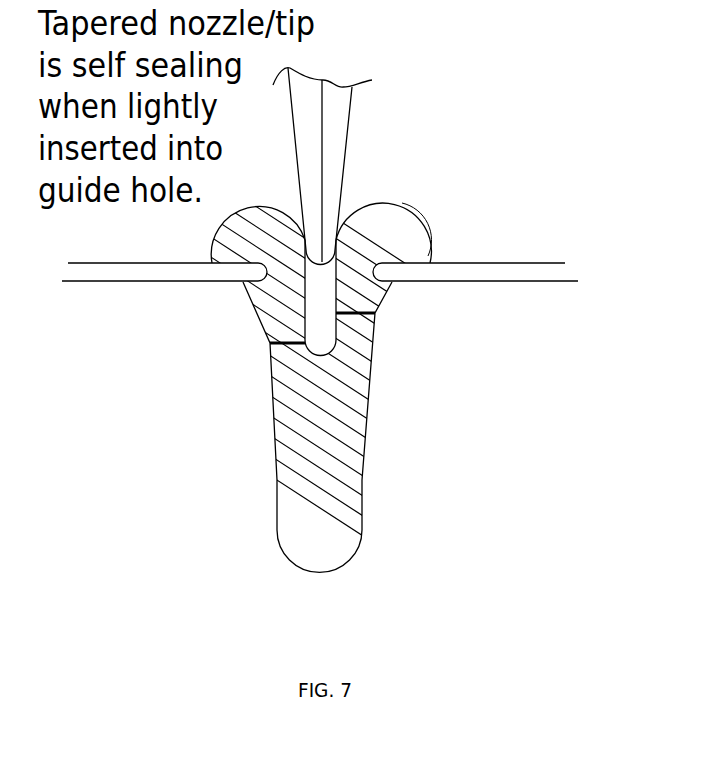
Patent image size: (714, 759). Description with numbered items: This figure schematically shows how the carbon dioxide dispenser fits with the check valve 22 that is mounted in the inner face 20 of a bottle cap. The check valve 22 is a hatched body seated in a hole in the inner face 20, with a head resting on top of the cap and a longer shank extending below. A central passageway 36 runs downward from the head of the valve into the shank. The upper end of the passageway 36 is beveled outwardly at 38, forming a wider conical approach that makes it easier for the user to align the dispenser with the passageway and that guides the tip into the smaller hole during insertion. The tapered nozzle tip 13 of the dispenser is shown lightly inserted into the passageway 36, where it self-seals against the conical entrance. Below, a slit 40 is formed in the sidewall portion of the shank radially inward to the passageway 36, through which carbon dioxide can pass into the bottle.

The nozzle tip 13 is at (330, 137).
The inner face 20 is at (523, 263).
The check valve 22 is at (343, 457).
The passageway 36 is at (307, 290).
The beveled upper end 38 is at (352, 202).
The slit 40 is at (288, 345).